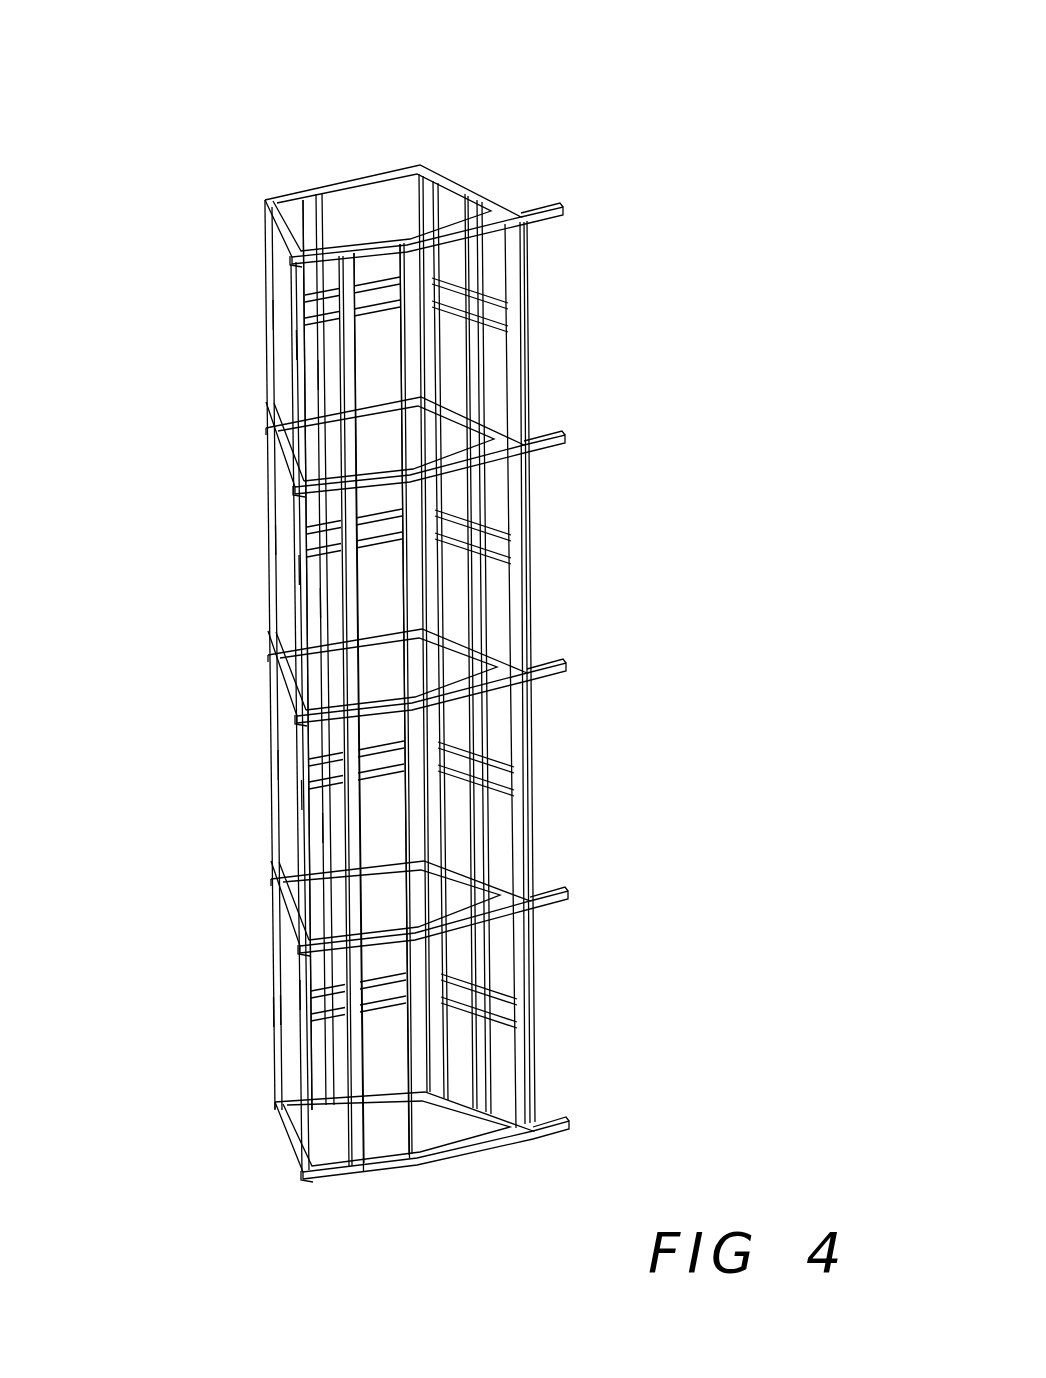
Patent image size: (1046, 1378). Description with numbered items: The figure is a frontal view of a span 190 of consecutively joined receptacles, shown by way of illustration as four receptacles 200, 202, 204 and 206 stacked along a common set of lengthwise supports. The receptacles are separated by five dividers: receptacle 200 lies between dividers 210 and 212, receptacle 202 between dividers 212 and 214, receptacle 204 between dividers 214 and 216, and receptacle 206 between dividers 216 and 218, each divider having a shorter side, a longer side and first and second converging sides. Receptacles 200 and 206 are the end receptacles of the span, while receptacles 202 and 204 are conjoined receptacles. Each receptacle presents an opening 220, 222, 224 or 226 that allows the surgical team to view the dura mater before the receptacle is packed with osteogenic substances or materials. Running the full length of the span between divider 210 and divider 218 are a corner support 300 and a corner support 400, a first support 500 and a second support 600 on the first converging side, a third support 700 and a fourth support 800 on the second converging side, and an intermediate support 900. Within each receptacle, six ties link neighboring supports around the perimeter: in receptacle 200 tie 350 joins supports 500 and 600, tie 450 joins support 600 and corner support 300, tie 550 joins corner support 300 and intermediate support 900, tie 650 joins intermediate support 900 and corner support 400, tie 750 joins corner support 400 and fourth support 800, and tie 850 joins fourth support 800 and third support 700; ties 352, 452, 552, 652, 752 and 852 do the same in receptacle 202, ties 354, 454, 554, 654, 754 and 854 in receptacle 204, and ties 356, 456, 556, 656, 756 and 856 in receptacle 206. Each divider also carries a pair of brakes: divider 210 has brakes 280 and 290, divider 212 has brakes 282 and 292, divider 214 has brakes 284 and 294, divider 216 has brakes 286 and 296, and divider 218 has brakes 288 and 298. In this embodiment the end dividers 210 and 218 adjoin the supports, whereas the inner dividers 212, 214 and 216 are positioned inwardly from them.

The span 190 is at (478, 80).
The receptacle 200 is at (730, 1002).
The receptacle 202 is at (722, 775).
The receptacle 204 is at (712, 544).
The receptacle 206 is at (691, 341).
The divider 210 is at (487, 1152).
The divider 212 is at (530, 906).
The divider 214 is at (527, 678).
The divider 216 is at (523, 450).
The divider 218 is at (478, 208).
The opening 220 is at (413, 1030).
The opening 222 is at (405, 825).
The opening 224 is at (402, 593).
The opening 226 is at (400, 359).
The brake 280 is at (572, 1127).
The brake 282 is at (567, 892).
The brake 284 is at (565, 664).
The brake 286 is at (562, 437).
The brake 288 is at (555, 203).
The brake 290 is at (303, 1176).
The brake 292 is at (300, 948).
The brake 294 is at (298, 714).
The brake 296 is at (300, 488).
The brake 298 is at (297, 258).
The corner support 300 is at (275, 1040).
The tie 350 is at (273, 1012).
The tie 352 is at (321, 828).
The tie 354 is at (318, 603).
The tie 356 is at (318, 377).
The corner support 400 is at (440, 1057).
The tie 450 is at (283, 1010).
The tie 452 is at (301, 795).
The tie 454 is at (298, 570).
The tie 456 is at (298, 344).
The first support 500 is at (327, 1092).
The tie 550 is at (300, 995).
The tie 552 is at (288, 765).
The tie 554 is at (285, 540).
The tie 556 is at (285, 314).
The second support 600 is at (300, 1060).
The tie 650 is at (378, 992).
The tie 652 is at (380, 745).
The tie 654 is at (378, 514).
The tie 656 is at (375, 290).
The third support 700 is at (533, 1088).
The tie 750 is at (460, 985).
The tie 752 is at (460, 753).
The tie 754 is at (460, 520).
The tie 756 is at (457, 290).
The fourth support 800 is at (470, 1075).
The tie 850 is at (490, 1012).
The tie 852 is at (490, 782).
The tie 854 is at (500, 537).
The tie 856 is at (503, 305).
The intermediate support 900 is at (347, 1078).